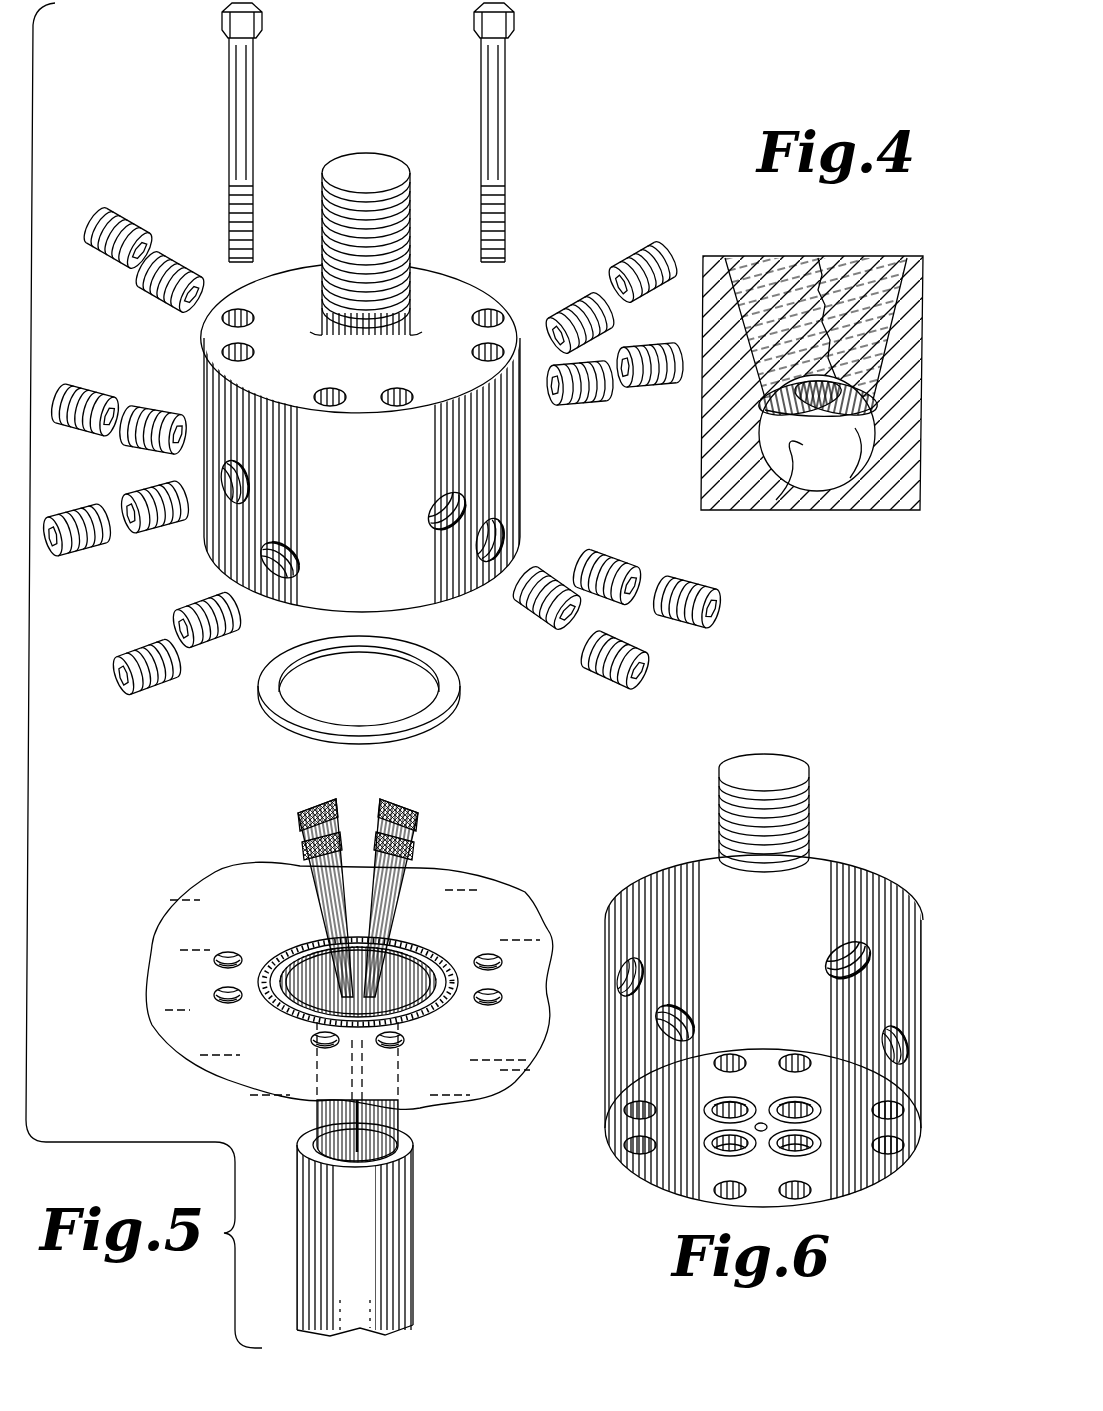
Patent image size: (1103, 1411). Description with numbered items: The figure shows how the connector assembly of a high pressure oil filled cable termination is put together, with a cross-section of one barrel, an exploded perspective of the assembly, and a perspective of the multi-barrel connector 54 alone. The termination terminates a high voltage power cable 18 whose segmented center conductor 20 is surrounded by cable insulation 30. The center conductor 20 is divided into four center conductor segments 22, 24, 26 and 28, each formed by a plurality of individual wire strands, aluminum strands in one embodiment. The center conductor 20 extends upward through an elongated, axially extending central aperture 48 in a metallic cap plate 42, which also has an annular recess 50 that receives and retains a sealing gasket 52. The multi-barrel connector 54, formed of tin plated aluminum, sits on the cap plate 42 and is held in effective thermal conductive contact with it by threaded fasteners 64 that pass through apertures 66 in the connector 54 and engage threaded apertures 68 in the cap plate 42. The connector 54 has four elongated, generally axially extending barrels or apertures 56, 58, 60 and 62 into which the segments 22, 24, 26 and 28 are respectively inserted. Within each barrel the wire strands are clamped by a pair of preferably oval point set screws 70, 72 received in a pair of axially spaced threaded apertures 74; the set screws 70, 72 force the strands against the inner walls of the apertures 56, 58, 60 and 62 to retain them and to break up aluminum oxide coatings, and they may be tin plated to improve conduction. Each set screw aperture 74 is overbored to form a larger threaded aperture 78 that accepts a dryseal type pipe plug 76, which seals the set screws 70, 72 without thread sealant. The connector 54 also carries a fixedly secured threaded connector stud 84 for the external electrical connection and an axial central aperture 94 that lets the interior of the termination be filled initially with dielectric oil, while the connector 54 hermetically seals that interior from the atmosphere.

In FIG. 5, the power cable 18 is at (331, 1333).
In FIG. 5, the center conductor 20 is at (403, 1111).
In FIG. 5, the center conductor segment 22 is at (302, 850).
In FIG. 5, the center conductor segment 24 is at (414, 850).
In FIG. 5, the center conductor segment 26 is at (318, 802).
In FIG. 5, the center conductor segment 28 is at (404, 802).
In FIG. 5, the cable insulation 30 is at (414, 1191).
In FIG. 5, the cap plate 42 is at (200, 907).
In FIG. 5, the central aperture 48 is at (292, 988).
In FIG. 5, the annular recess 50 is at (445, 948).
In FIG. 4, the sealing gasket 52 is at (272, 714).
In FIG. 4, the multi-barrel connector 54 is at (527, 466).
In FIG. 6, the multi-barrel connector 54 is at (856, 866).
In FIG. 4, the barrel aperture 56 is at (800, 488).
In FIG. 6, the barrel aperture 56 is at (728, 1104).
In FIG. 6, the barrel aperture 58 is at (800, 1104).
In FIG. 6, the barrel aperture 60 is at (722, 1152).
In FIG. 6, the barrel aperture 62 is at (800, 1152).
In FIG. 4, the threaded fasteners 64 is at (227, 72).
In FIG. 4, the apertures 66 is at (224, 352).
In FIG. 6, the apertures 66 is at (793, 1062).
In FIG. 5, the threaded apertures 68 is at (502, 997).
In FIG. 4, the set screw 70 is at (156, 414).
In FIG. 4, the set screw 72 is at (183, 270).
In FIG. 4, the threaded apertures 74 is at (745, 264).
In FIG. 6, the threaded apertures 74 is at (724, 1131).
In FIG. 4, the pipe plugs 76 is at (132, 222).
In FIG. 4, the threaded aperture 78 is at (264, 558).
In FIG. 6, the threaded aperture 78 is at (885, 1044).
In FIG. 4, the threaded connector stud 84 is at (412, 182).
In FIG. 6, the threaded connector stud 84 is at (810, 778).
In FIG. 6, the axial central aperture 94 is at (762, 1122).